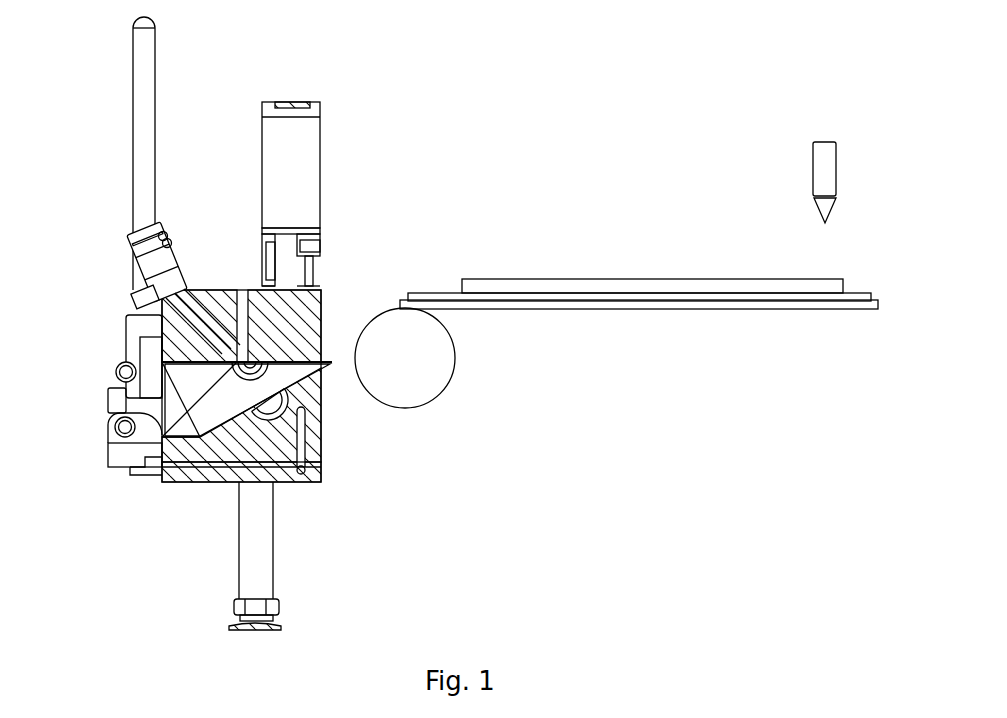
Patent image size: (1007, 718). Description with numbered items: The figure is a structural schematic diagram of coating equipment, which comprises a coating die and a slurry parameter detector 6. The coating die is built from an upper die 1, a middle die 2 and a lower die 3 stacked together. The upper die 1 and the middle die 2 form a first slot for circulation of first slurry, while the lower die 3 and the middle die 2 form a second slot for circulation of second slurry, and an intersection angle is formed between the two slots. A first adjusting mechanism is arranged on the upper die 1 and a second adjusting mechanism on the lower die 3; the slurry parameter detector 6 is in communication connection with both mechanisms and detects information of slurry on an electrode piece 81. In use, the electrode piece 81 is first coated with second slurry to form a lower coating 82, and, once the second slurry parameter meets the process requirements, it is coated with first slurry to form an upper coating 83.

The upper die 1 is at (131, 288).
The middle die 2 is at (176, 371).
The lower die 3 is at (171, 431).
The slurry parameter detector 6 is at (813, 165).
The electrode piece 81 is at (639, 247).
The lower coating 82 is at (639, 224).
The upper coating 83 is at (652, 202).